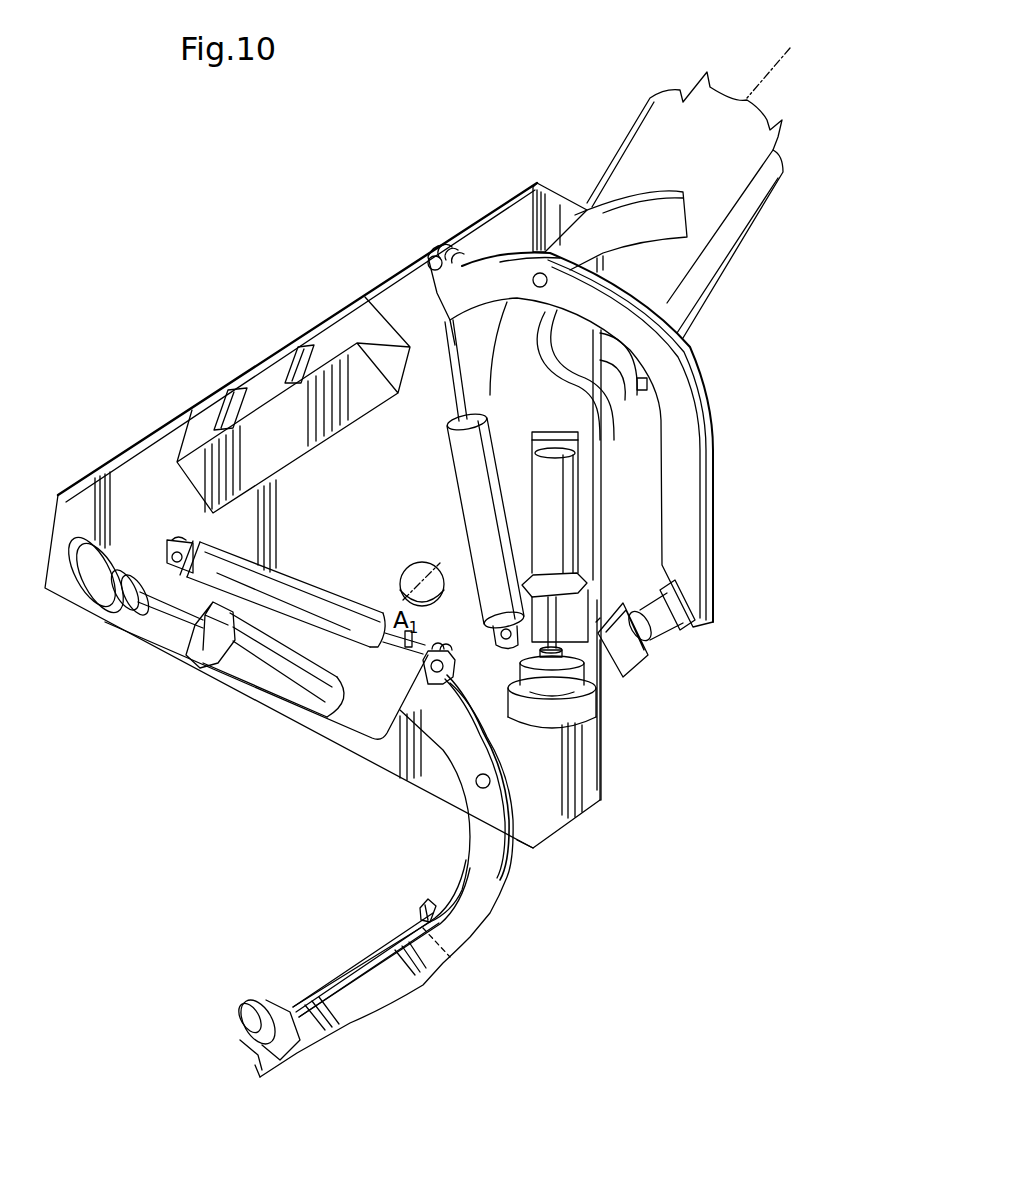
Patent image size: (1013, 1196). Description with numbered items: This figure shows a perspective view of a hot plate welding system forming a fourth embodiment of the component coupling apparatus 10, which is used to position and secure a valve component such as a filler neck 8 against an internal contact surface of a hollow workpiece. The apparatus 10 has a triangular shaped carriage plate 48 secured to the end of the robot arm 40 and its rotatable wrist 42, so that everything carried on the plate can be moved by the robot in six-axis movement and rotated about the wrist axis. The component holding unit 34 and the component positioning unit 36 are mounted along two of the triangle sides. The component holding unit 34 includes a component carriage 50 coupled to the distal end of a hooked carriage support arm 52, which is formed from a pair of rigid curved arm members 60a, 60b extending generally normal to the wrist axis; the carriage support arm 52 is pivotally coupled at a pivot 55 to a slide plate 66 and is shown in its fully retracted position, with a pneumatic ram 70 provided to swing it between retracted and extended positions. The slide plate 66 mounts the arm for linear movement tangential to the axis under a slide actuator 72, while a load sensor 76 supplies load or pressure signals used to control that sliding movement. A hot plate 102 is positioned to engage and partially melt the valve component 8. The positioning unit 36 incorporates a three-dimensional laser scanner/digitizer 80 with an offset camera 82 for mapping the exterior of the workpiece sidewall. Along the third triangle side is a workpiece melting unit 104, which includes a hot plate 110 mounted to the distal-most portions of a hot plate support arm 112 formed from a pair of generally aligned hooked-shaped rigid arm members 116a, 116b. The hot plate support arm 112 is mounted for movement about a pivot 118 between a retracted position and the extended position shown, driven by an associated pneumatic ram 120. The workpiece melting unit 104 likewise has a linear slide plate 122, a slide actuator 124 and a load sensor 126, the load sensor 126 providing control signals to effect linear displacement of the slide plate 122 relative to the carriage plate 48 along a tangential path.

The component coupling apparatus 10 is at (206, 266).
The pivot 55 is at (536, 276).
The robot arm 40 is at (765, 188).
The offset camera 82 is at (298, 357).
The scanner/digitizer 80 is at (226, 410).
The component holding unit 34 is at (626, 435).
The curved arm member 60b is at (710, 413).
The curved arm member 60a is at (716, 459).
The carriage support arm 52 is at (690, 528).
The positioning unit 36 is at (298, 414).
The pneumatic ram 70 is at (468, 470).
The wrist 42 is at (598, 360).
The slide actuator 72 is at (565, 548).
The slide plate 66 is at (577, 610).
The pneumatic ram 120 is at (265, 585).
The filler neck 8 is at (657, 633).
The component carriage 50 is at (693, 634).
The hot plate 102 is at (632, 660).
The load sensor 76 is at (590, 708).
The pivot 118 is at (520, 790).
The carriage plate 48 is at (560, 804).
The hot plate support arm 112 is at (467, 897).
The load sensor 126 is at (82, 623).
The workpiece melting unit 104 is at (145, 645).
The slide actuator 124 is at (232, 665).
The linear slide plate 122 is at (322, 710).
The arm member 116a is at (312, 988).
The arm member 116b is at (363, 947).
The hot plate 110 is at (240, 1020).